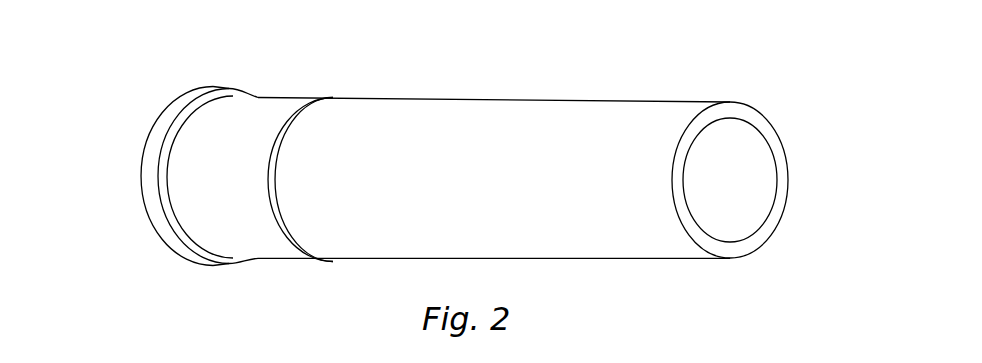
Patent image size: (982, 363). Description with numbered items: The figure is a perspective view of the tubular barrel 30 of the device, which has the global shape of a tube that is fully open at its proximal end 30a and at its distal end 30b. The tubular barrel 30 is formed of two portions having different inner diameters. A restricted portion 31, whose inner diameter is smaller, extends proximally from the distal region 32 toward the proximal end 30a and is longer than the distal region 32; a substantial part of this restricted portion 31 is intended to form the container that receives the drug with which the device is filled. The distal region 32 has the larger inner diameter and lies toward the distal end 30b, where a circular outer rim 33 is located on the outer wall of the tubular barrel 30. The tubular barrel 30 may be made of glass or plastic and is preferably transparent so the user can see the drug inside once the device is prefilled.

The tubular barrel 30 is at (498, 75).
The proximal end 30a is at (803, 168).
The distal end 30b is at (130, 182).
The restricted portion 31 is at (597, 118).
The distal region 32 is at (265, 112).
The circular outer rim 33 is at (160, 227).